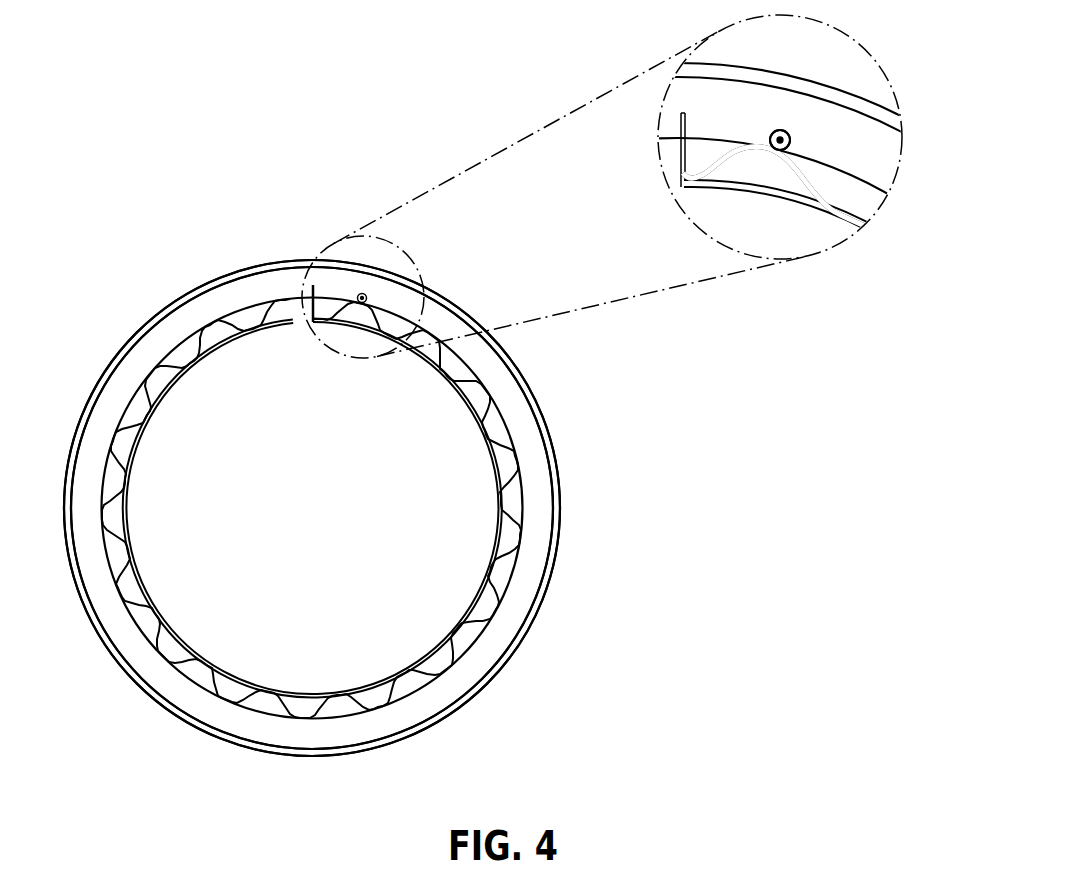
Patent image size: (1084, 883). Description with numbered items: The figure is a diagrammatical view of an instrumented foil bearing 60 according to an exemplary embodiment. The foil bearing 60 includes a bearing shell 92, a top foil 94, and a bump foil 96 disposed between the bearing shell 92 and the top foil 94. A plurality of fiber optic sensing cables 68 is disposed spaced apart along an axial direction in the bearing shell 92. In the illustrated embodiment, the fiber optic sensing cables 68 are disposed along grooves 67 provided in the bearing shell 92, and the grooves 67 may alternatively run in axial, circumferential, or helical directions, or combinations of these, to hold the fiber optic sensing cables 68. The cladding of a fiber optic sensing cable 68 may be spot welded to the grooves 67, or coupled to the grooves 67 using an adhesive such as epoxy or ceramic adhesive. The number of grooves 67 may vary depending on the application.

The foil bearing 60 is at (136, 296).
The grooves 67 is at (791, 139).
The fiber optic sensing cables 68 is at (359, 294).
The bearing shell 92 is at (244, 269).
The top foil 94 is at (462, 645).
The bump foil 96 is at (514, 467).